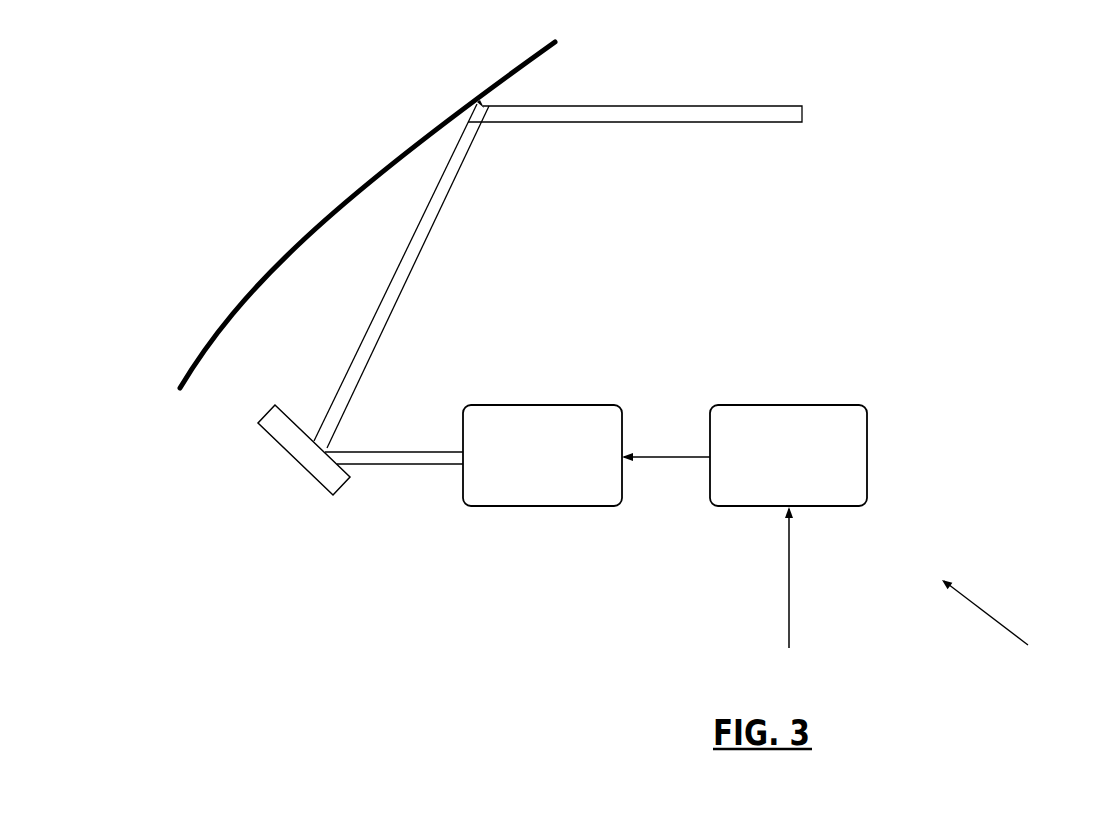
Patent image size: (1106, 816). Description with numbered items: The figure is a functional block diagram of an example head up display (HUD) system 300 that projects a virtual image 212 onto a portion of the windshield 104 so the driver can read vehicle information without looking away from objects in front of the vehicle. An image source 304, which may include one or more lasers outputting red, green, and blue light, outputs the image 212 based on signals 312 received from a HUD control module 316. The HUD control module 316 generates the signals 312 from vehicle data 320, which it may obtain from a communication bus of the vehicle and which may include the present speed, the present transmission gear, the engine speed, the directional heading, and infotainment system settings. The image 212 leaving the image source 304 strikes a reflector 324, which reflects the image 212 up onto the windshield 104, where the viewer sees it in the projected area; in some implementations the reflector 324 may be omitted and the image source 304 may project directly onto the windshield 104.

The windshield 104 is at (370, 177).
The image 212 is at (635, 123).
The head up display (HUD) system 300 is at (1005, 620).
The image source 304 is at (590, 405).
The signals 312 is at (640, 453).
The HUD control module 316 is at (837, 405).
The vehicle data 320 is at (790, 560).
The reflector 324 is at (315, 462).